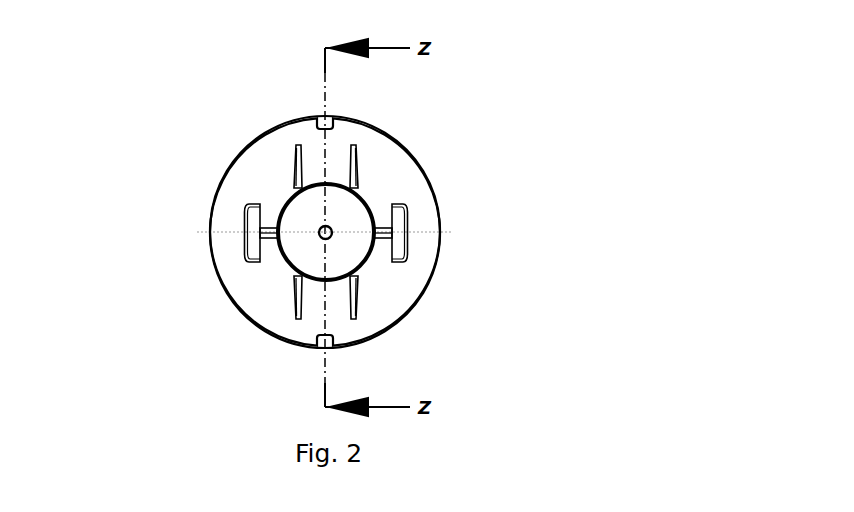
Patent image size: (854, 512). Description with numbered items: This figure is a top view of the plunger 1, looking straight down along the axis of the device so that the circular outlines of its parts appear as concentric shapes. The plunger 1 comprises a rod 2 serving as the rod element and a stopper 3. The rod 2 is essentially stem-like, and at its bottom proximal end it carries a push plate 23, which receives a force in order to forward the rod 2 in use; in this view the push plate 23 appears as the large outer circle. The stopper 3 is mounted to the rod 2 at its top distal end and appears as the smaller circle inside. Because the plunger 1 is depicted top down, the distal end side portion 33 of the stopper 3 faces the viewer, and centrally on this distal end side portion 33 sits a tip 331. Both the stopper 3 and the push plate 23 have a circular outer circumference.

The plunger 1 is at (207, 150).
The rod 2 is at (460, 249).
The push plate 23 is at (392, 180).
The stopper 3 is at (390, 264).
The distal end side portion 33 is at (307, 265).
The tip 331 is at (318, 231).